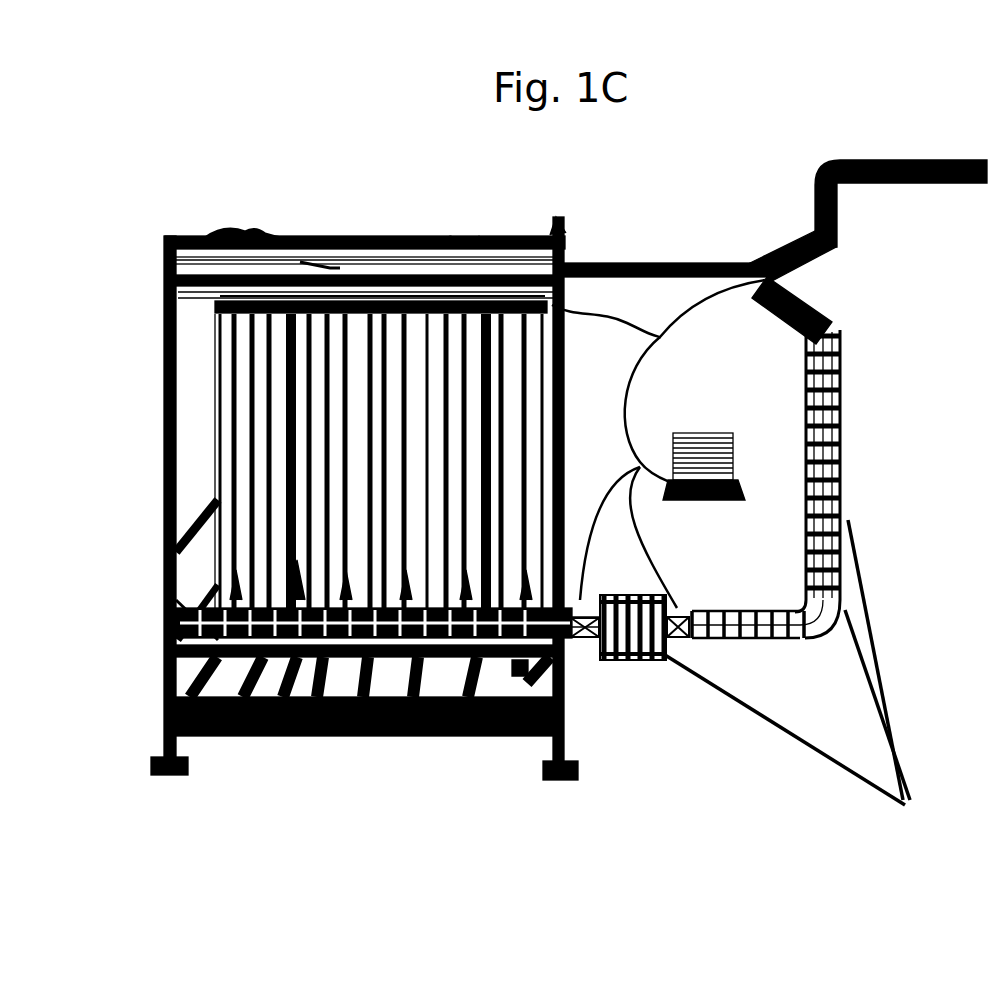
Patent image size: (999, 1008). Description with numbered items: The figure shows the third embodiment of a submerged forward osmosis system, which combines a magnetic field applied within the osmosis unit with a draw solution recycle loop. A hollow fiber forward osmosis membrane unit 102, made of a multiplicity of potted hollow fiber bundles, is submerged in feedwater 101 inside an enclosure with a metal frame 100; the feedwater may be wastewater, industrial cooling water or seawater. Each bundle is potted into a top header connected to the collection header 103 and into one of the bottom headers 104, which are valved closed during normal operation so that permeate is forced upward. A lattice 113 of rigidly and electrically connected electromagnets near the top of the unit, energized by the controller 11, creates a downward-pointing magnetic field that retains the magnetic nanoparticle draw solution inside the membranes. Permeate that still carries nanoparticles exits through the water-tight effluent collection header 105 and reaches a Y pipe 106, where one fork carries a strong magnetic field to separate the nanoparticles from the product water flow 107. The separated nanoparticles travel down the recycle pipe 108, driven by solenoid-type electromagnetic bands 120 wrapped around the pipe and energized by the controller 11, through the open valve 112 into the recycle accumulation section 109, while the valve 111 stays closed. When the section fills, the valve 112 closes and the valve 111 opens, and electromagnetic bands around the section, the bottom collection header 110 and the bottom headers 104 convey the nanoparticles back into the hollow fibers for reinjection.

The metal frame 100 is at (165, 232).
The feedwater 101 is at (200, 462).
The forward osmosis membrane unit 102 is at (485, 422).
The collection header 103 is at (328, 265).
The bottom headers 104 is at (212, 614).
The effluent collection header 105 is at (595, 240).
The Y pipe 106 is at (800, 272).
The product water flow 107 is at (900, 150).
The recycle pipe 108 is at (808, 357).
The recycle accumulation section 109 is at (636, 668).
The bottom collection header 110 is at (295, 640).
The valve 111 is at (589, 650).
The valve 112 is at (684, 644).
The electromagnet lattice 113 is at (208, 310).
The electromagnetic bands 120 is at (809, 678).
The controller 11 is at (658, 444).